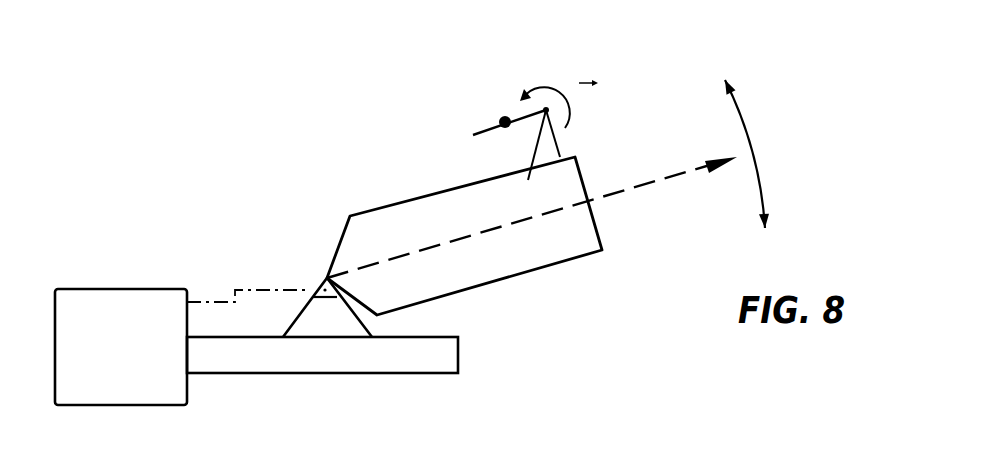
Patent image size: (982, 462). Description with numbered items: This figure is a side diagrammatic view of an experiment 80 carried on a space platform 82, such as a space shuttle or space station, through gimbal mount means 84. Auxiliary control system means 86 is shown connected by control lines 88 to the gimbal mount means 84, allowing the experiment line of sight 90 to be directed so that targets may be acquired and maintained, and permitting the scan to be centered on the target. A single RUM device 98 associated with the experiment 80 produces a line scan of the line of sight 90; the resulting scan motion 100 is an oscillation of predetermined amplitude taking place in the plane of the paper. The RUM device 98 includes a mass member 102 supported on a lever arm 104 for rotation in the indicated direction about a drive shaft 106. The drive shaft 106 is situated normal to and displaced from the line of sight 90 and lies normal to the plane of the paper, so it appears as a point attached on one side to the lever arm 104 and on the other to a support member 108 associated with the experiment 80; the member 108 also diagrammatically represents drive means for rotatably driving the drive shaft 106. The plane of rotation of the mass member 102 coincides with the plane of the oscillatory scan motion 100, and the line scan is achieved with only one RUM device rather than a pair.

The experiment 80 is at (435, 193).
The platform 82 is at (458, 355).
The gimbal mount means 84 is at (328, 285).
The auxiliary control system means 86 is at (146, 288).
The control lines 88 is at (258, 290).
The experiment line of sight 90 is at (655, 178).
The RUM device 98 is at (551, 68).
The scan motion 100 is at (748, 137).
The mass member 102 is at (496, 135).
The lever arm 104 is at (523, 115).
The drive shaft 106 is at (520, 161).
The support member 108 is at (557, 142).